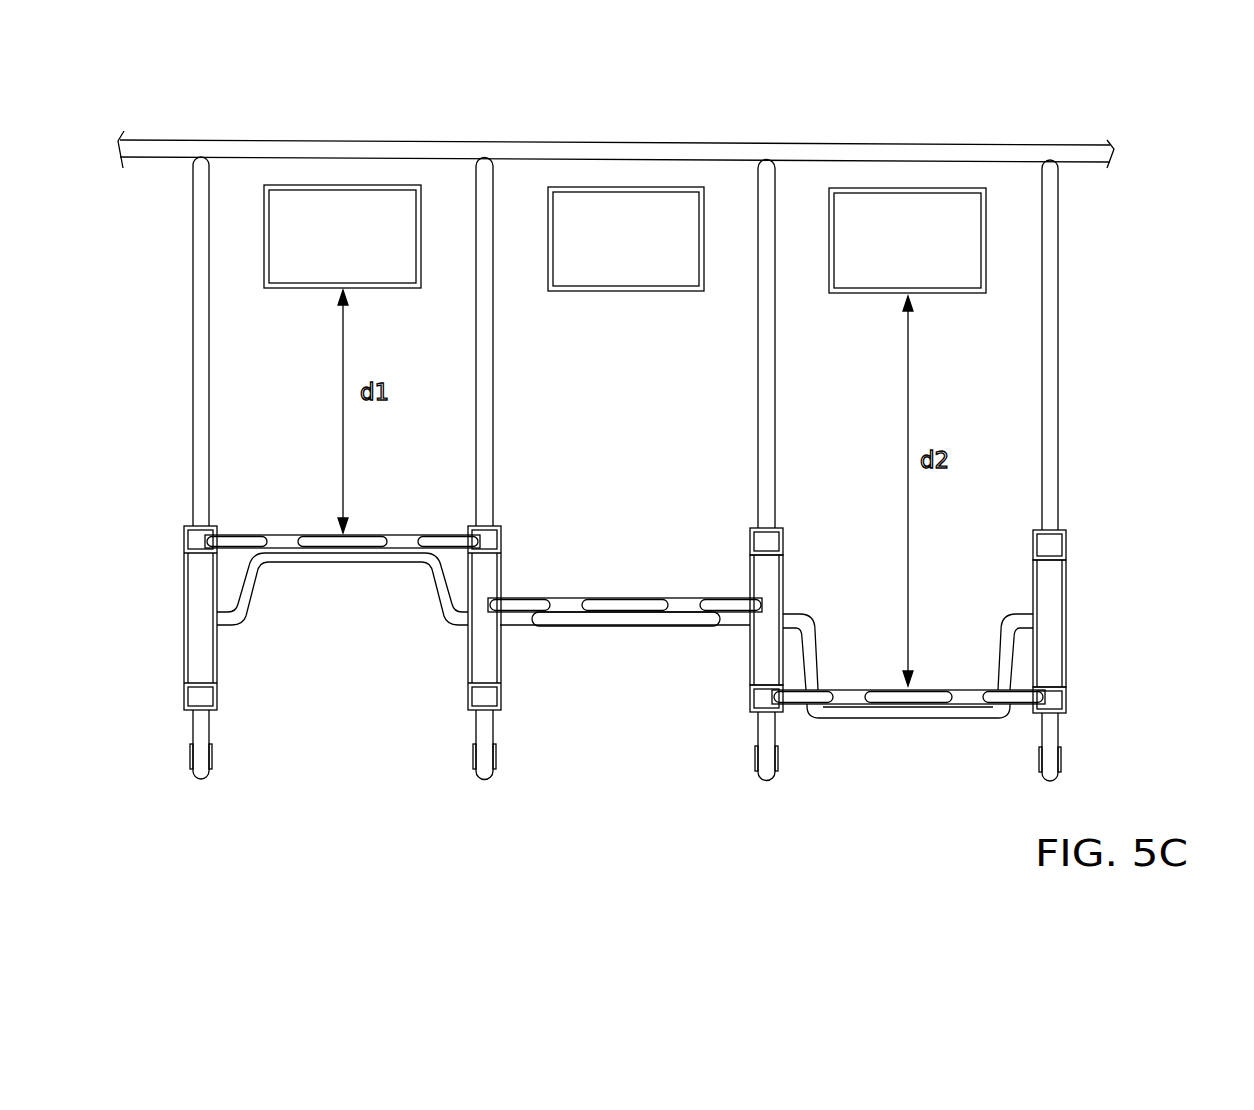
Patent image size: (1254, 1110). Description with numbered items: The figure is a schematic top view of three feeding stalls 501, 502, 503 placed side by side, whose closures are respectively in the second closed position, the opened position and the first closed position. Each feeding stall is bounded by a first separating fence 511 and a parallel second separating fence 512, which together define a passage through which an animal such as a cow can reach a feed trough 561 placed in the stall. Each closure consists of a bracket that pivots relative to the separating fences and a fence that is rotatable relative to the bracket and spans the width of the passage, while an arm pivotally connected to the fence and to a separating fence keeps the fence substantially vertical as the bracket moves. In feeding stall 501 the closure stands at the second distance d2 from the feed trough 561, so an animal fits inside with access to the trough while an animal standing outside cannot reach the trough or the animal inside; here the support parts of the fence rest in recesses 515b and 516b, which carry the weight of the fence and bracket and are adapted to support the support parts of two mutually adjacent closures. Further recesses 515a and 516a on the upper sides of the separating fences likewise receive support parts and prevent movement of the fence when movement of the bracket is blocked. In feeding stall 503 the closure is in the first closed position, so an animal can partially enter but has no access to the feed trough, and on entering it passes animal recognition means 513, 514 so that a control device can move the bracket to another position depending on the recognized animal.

The feeding stall 501 is at (930, 120).
The feeding stall 502 is at (640, 113).
The feeding stall 503 is at (322, 117).
The first separating fence 511 is at (767, 781).
The second separating fence 512 is at (1060, 783).
The animal recognition means 513 is at (778, 755).
The animal recognition means 514 is at (1047, 771).
The recess 515a is at (758, 548).
The recess 515b is at (757, 692).
The recess 516a is at (1060, 548).
The recess 516b is at (1060, 700).
The feed trough 561 is at (978, 233).